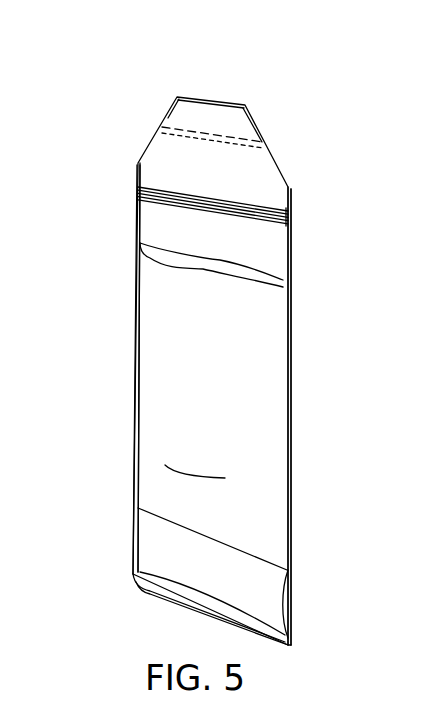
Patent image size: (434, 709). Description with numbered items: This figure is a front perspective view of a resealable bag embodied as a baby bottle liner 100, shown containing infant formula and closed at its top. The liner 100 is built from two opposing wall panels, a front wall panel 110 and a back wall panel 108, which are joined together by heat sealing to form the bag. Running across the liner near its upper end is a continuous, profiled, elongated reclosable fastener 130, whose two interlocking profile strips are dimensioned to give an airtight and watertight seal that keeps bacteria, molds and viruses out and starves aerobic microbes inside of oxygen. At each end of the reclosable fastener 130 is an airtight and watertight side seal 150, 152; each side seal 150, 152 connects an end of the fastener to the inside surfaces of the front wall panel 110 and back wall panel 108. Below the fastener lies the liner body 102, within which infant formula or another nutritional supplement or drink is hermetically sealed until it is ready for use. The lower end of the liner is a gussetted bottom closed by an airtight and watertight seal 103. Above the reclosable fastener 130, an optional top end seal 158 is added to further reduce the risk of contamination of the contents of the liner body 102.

The baby bottle liner 100 is at (330, 92).
The top end seal 158 is at (175, 102).
The side seal 150 is at (140, 192).
The side seal 152 is at (288, 218).
The reclosable fastener 130 is at (257, 225).
The liner body 102 is at (178, 352).
The back wall panel 108 is at (263, 412).
The front wall panel 110 is at (293, 462).
The seal at the gussetted bottom 103 is at (268, 610).